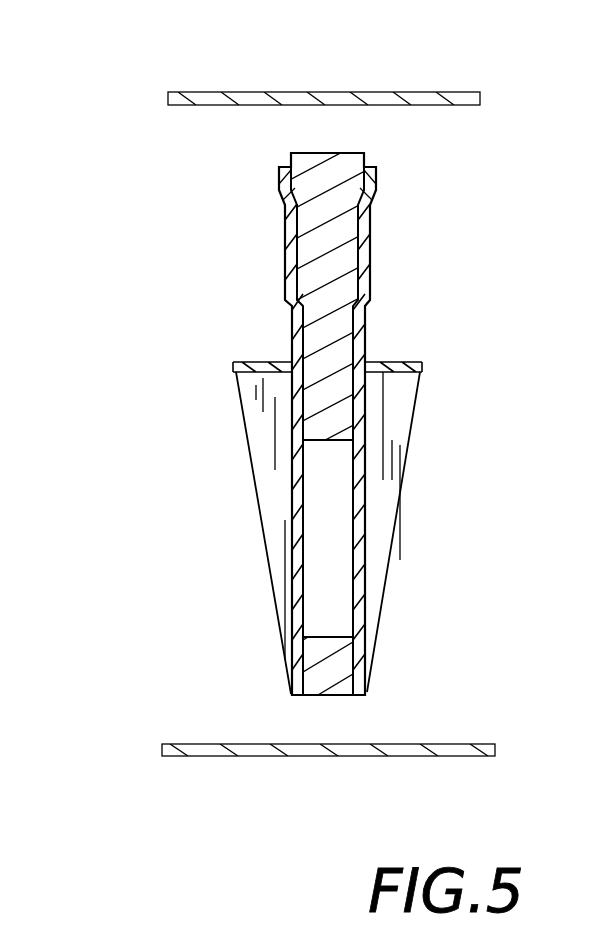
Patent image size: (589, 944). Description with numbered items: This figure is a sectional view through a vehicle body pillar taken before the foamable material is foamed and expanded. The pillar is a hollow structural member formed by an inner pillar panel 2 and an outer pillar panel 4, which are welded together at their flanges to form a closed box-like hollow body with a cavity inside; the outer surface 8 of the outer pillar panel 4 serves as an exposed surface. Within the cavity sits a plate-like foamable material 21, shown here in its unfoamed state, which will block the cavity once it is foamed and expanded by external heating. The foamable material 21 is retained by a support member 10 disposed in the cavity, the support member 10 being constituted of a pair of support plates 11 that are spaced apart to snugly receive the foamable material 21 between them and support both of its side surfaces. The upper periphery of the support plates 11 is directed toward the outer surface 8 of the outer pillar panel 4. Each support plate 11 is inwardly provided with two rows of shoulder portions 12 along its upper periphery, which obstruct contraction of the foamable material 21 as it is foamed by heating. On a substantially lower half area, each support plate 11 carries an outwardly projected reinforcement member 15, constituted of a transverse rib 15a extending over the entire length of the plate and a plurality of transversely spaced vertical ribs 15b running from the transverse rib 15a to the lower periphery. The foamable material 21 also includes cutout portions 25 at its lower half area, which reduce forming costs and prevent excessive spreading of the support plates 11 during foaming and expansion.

The inner pillar panel 2 is at (445, 748).
The outer pillar panel 4 is at (468, 92).
The outer surface 8 is at (338, 92).
The support member 10 is at (273, 305).
The support plates 11 is at (362, 333).
The shoulder portions 12 is at (367, 303).
The reinforcement member 15 is at (331, 522).
The transverse rib 15a is at (388, 376).
The vertical ribs 15b is at (395, 447).
The foamable material 21 is at (333, 157).
The cutout portions 25 is at (327, 450).